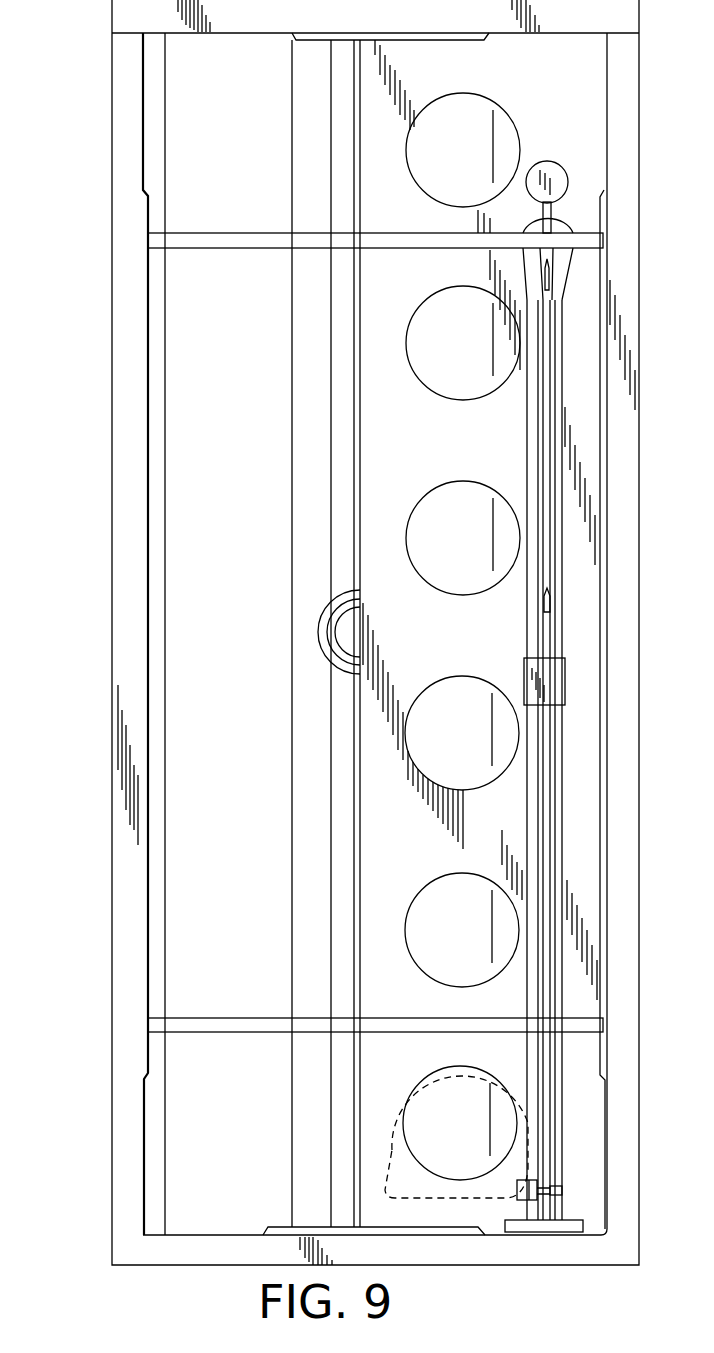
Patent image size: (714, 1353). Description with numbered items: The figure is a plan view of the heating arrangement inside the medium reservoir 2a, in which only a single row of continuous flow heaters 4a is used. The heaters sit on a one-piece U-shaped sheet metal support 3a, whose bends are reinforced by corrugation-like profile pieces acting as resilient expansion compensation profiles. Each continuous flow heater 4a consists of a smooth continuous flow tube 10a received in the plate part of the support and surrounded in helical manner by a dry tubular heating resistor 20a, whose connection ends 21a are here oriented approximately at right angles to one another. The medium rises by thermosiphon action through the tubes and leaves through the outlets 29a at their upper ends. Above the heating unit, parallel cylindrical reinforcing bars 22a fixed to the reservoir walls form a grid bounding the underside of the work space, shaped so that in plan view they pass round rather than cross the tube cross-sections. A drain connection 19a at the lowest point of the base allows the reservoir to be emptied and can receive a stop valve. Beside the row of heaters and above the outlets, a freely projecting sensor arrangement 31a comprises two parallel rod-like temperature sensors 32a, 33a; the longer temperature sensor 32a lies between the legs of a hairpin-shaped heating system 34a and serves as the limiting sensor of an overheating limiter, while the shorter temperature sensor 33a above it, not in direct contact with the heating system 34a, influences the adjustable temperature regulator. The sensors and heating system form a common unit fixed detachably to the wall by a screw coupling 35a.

The medium reservoir 2a is at (95, 151).
The support 3a is at (321, 857).
The continuous flow heater 4a is at (406, 676).
The continuous flow tube 10a is at (421, 1073).
The drain connection 19a is at (336, 620).
The heating resistor 20a is at (449, 1146).
The connection ends 21a is at (554, 1188).
The reinforcing bar 22a is at (243, 1026).
The outlet 29a is at (438, 568).
The sensor arrangement 31a is at (513, 802).
The temperature sensor 32a is at (543, 403).
The temperature sensor 33a is at (546, 622).
The heating system 34a is at (530, 228).
The screw coupling 35a is at (549, 1228).